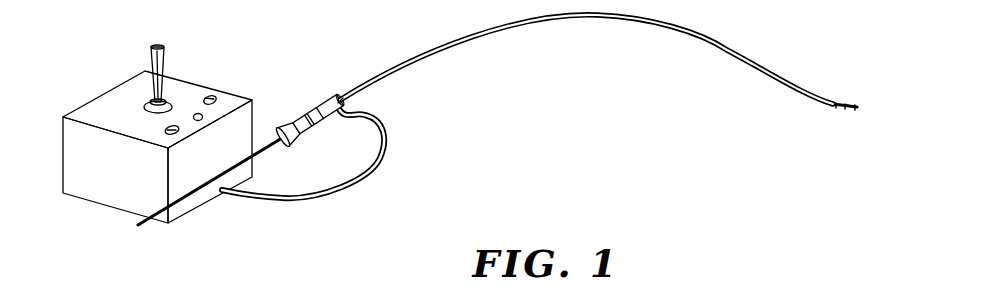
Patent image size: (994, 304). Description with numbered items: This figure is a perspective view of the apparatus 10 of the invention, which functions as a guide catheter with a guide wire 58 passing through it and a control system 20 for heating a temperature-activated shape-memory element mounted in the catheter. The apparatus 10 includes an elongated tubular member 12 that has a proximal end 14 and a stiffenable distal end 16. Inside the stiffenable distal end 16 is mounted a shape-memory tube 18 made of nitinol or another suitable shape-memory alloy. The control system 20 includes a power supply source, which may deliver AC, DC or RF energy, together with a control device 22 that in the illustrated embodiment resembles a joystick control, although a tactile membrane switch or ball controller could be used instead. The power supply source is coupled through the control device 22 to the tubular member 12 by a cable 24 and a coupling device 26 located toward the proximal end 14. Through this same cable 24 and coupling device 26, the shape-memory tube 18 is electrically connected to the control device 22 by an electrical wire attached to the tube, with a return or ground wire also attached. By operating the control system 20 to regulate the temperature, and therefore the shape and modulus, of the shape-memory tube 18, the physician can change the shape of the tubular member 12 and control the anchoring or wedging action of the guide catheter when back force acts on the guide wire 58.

The apparatus 10 is at (597, 81).
The elongated tubular member 12 is at (578, 26).
The proximal end 14 is at (344, 90).
The stiffenable distal end 16 is at (847, 118).
The shape-memory tube 18 is at (843, 97).
The control system 20 is at (239, 89).
The control device 22 is at (152, 58).
The cable 24 is at (353, 182).
The coupling device 26 is at (298, 112).
The guide wire 58 is at (198, 192).